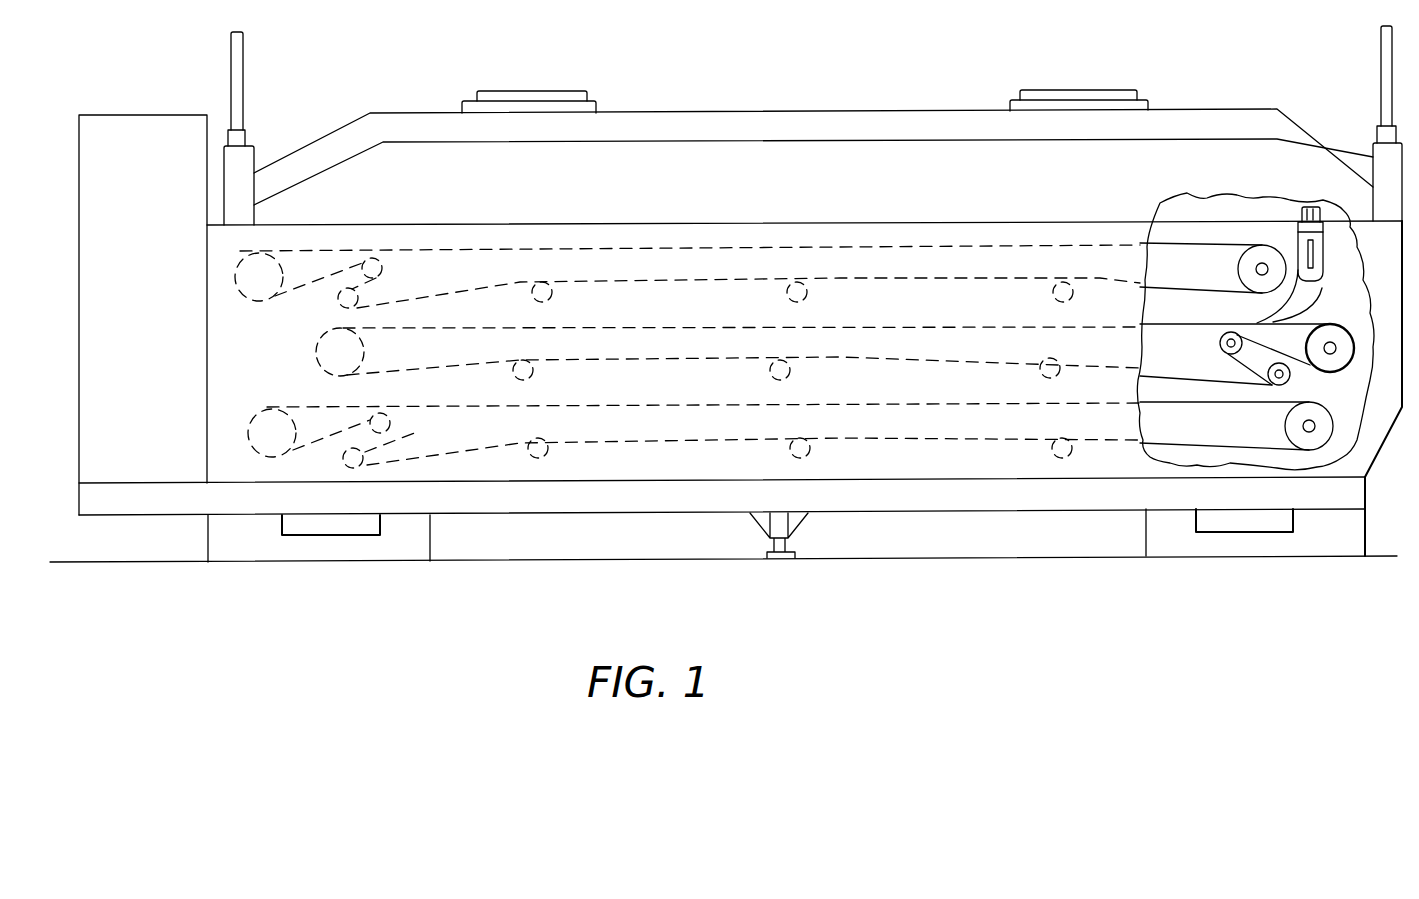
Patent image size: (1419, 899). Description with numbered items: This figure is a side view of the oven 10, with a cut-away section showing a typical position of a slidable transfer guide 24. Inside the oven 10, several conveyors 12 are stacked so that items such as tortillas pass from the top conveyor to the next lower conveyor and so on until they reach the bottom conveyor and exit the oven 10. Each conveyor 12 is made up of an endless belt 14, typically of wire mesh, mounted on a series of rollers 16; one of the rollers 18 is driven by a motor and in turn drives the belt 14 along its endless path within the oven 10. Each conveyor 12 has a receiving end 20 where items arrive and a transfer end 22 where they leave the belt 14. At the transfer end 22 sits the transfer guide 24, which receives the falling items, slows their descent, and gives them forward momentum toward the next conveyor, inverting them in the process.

The oven 10 is at (861, 112).
The conveyor 12 is at (698, 279).
The endless belt 14 is at (1210, 242).
The roller 16 is at (385, 268).
The driven roller 18 is at (250, 300).
The receiving end 20 is at (237, 290).
The transfer end 22 is at (430, 328).
The transfer guide 24 is at (1303, 300).